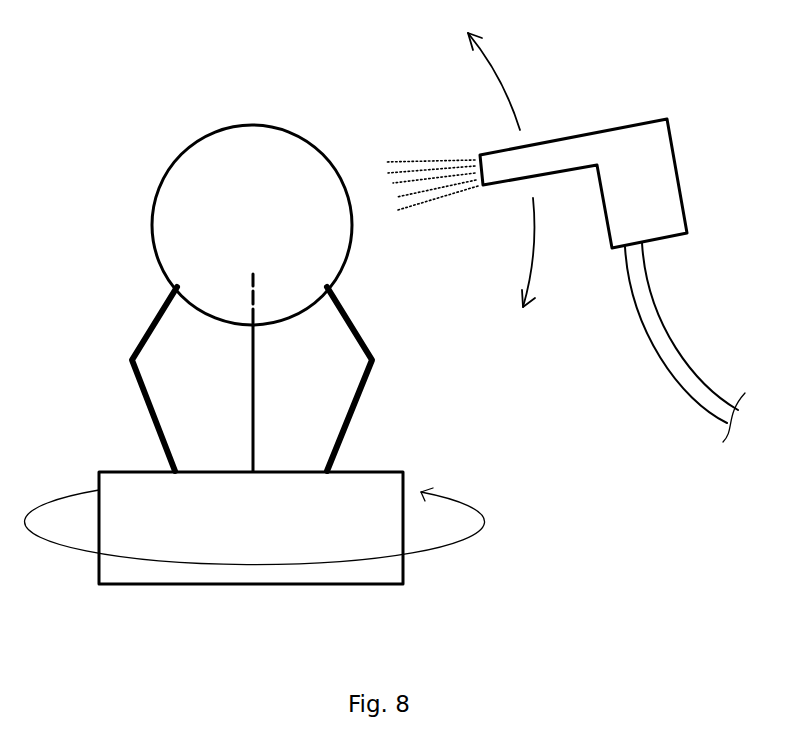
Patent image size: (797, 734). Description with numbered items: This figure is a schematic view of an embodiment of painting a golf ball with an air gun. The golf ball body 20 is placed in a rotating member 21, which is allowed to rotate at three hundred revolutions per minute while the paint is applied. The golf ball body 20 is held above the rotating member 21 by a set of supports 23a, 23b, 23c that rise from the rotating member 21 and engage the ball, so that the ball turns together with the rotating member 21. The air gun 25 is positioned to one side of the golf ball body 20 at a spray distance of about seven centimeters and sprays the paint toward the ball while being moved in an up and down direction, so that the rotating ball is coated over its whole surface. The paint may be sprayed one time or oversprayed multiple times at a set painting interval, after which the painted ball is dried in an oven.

The golf ball body 20 is at (225, 153).
The rotating member 21 is at (380, 490).
The support arm 23a is at (148, 327).
The support arm 23b is at (365, 343).
The center support rod 23c is at (252, 420).
The air gun 25 is at (650, 167).